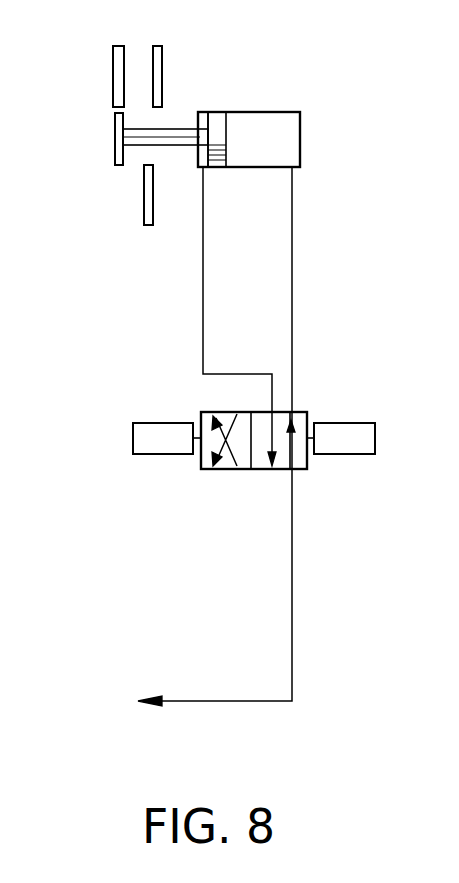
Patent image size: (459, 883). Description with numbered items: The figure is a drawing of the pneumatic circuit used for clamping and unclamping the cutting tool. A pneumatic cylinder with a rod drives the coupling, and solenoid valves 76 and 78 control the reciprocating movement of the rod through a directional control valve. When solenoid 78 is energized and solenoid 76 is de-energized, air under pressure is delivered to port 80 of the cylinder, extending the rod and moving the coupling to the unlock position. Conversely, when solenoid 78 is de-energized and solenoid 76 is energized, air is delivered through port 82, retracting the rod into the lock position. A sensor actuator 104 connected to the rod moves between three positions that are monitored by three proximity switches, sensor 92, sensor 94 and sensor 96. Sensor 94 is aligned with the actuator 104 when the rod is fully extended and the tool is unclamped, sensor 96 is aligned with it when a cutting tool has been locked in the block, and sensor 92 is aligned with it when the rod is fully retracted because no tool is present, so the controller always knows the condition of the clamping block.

The sensor 94 is at (113, 59).
The sensor 92 is at (162, 60).
The sensor 96 is at (143, 210).
The sensor actuator 104 is at (115, 152).
The port 80 is at (293, 167).
The port 82 is at (202, 167).
The solenoid valve 76 is at (148, 454).
The solenoid valve 78 is at (340, 454).